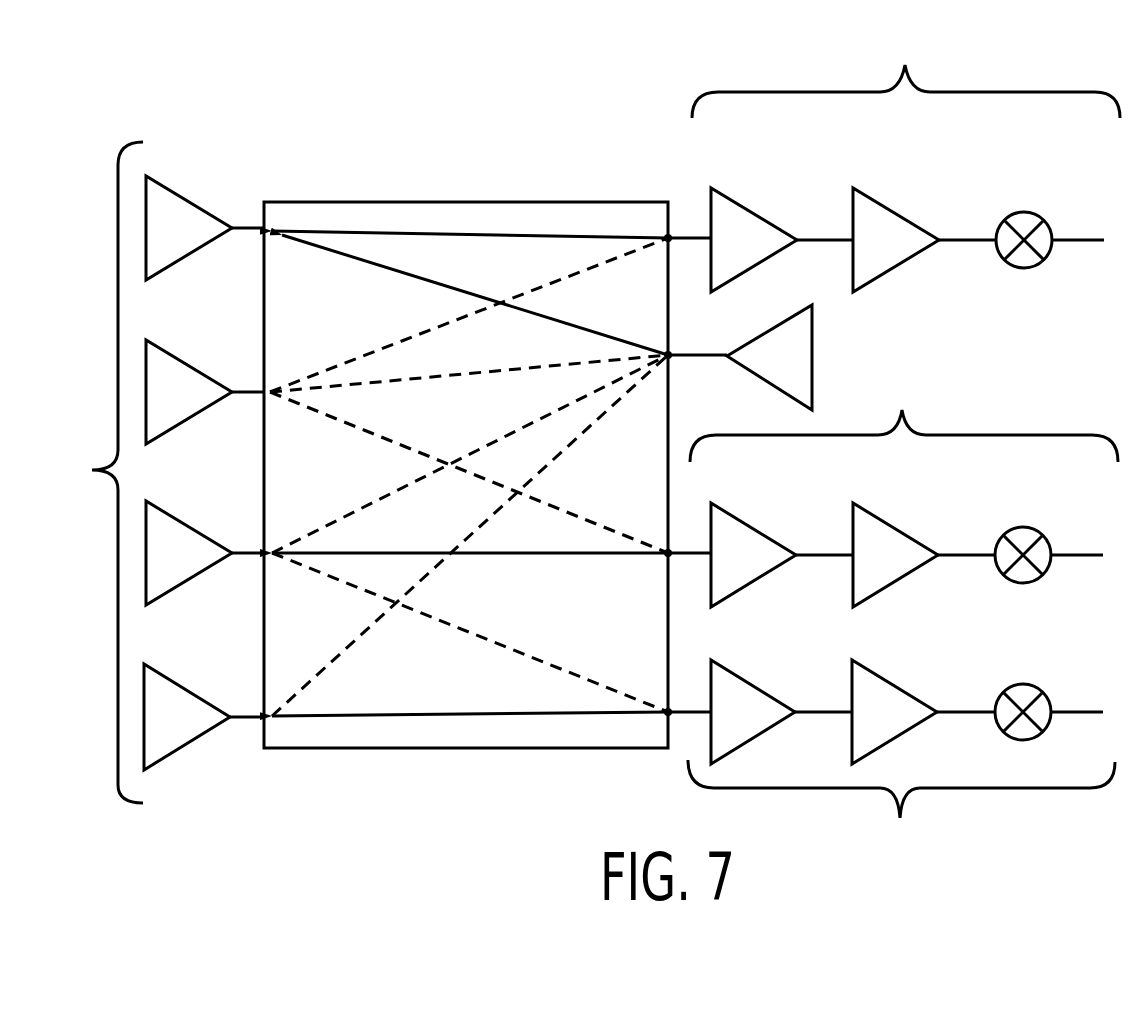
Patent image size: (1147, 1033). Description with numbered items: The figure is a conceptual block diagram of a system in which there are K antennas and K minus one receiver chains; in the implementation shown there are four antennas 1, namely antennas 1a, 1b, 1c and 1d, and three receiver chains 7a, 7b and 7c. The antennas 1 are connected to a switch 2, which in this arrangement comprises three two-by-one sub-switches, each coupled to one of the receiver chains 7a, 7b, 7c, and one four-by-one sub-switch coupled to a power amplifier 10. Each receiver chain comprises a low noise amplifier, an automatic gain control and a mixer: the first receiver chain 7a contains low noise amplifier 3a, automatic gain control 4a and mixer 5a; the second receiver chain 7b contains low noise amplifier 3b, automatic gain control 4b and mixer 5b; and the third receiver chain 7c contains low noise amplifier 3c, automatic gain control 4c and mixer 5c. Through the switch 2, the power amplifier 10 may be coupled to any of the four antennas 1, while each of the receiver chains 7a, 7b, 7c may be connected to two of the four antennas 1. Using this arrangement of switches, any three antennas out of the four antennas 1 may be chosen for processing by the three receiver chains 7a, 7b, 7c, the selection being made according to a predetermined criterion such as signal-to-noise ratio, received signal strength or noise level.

The antennas 1 is at (105, 472).
The antenna 1a is at (205, 203).
The antenna 1b is at (205, 367).
The antenna 1c is at (205, 528).
The antenna 1d is at (203, 692).
The switch 2 is at (505, 200).
The low noise amplifier 3a is at (755, 208).
The low noise amplifier 3b is at (755, 523).
The low noise amplifier 3c is at (755, 680).
The automatic gain control 4a is at (898, 208).
The automatic gain control 4b is at (898, 523).
The automatic gain control 4c is at (898, 680).
The mixer 5a is at (1027, 213).
The mixer 5b is at (1026, 528).
The mixer 5c is at (1026, 685).
The receiver chain 7a is at (906, 71).
The receiver chain 7b is at (904, 415).
The receiver chain 7c is at (901, 809).
The power amplifier 10 is at (812, 357).